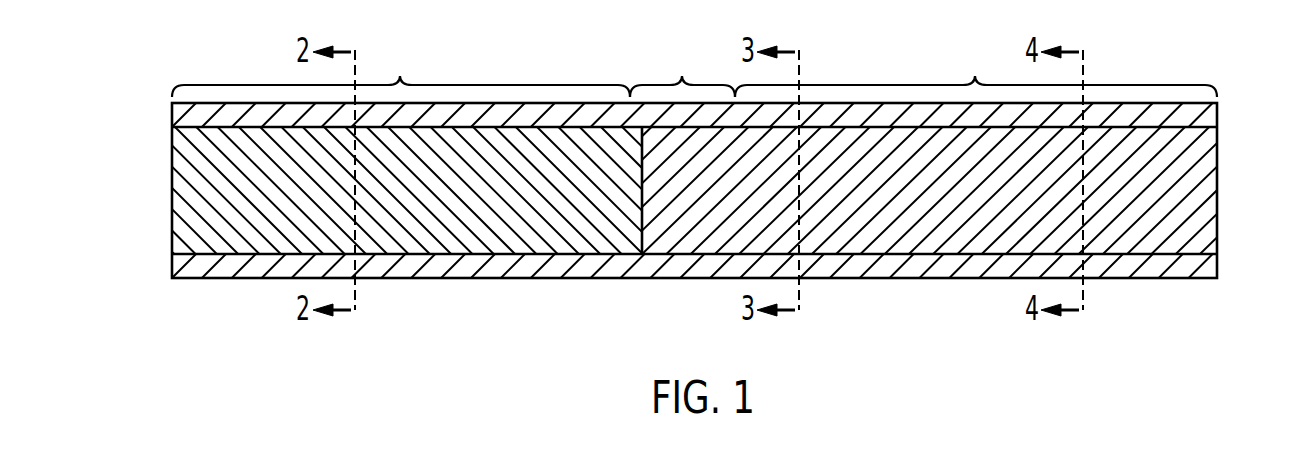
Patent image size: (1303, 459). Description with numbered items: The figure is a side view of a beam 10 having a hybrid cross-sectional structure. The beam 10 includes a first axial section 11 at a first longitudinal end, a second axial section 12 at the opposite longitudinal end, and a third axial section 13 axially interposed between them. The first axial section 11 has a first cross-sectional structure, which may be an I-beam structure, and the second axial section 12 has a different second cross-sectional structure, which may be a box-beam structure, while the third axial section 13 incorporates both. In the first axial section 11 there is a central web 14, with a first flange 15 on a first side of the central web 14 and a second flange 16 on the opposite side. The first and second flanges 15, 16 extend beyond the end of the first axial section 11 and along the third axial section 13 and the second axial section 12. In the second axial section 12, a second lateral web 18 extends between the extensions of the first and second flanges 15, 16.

The beam 10 is at (157, 108).
The first axial section 11 is at (401, 161).
The second axial section 12 is at (976, 161).
The third axial section 13 is at (682, 161).
The central web 14 is at (178, 186).
The first flange 15 is at (875, 267).
The second flange 16 is at (883, 115).
The second lateral web 18 is at (1195, 222).